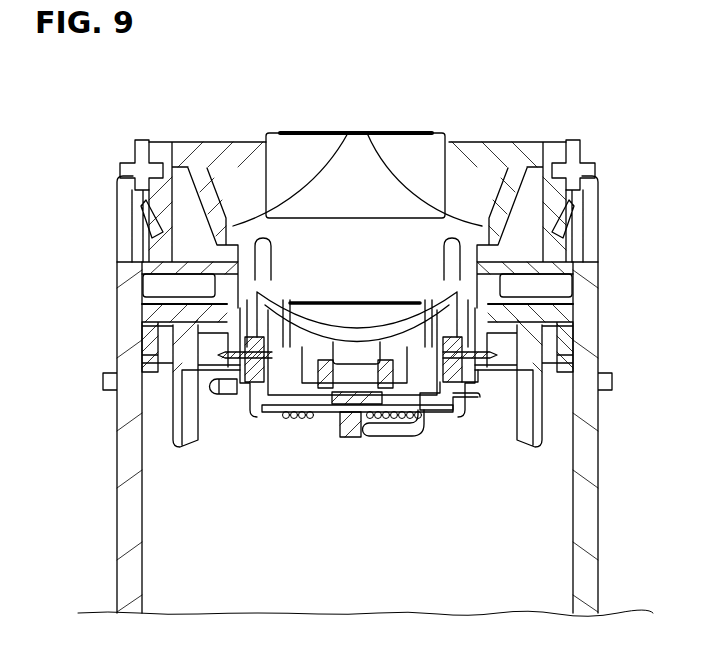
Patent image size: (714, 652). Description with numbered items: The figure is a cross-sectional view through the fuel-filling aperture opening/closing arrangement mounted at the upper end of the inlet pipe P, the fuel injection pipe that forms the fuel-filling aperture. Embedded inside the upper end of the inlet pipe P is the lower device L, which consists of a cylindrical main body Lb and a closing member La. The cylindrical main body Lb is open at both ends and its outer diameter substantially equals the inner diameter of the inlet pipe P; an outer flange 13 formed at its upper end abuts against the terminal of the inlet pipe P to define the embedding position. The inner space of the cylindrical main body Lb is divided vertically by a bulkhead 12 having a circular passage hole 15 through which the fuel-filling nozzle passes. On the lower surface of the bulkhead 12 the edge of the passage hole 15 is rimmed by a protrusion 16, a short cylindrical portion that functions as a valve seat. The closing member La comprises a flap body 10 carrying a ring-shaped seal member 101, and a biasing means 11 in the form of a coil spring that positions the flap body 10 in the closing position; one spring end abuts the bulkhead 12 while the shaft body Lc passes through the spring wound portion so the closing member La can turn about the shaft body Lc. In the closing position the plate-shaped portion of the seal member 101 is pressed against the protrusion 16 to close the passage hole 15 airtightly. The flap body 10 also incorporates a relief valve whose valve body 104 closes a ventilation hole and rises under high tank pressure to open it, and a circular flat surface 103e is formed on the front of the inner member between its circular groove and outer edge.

The inlet pipe P is at (118, 516).
The outer flange 13 is at (121, 164).
The bulkhead 12 is at (467, 215).
The lower device L is at (455, 130).
The cylindrical main body Lb is at (323, 164).
The protrusion 16 is at (157, 342).
The circular flat surface 103e is at (218, 362).
The shaft body Lc is at (228, 396).
The valve body 104 is at (347, 320).
The passage hole 15 is at (397, 296).
The flap body 10 is at (328, 414).
The closing member La is at (299, 412).
The biasing means 11 is at (390, 438).
The seal member 101 is at (418, 418).